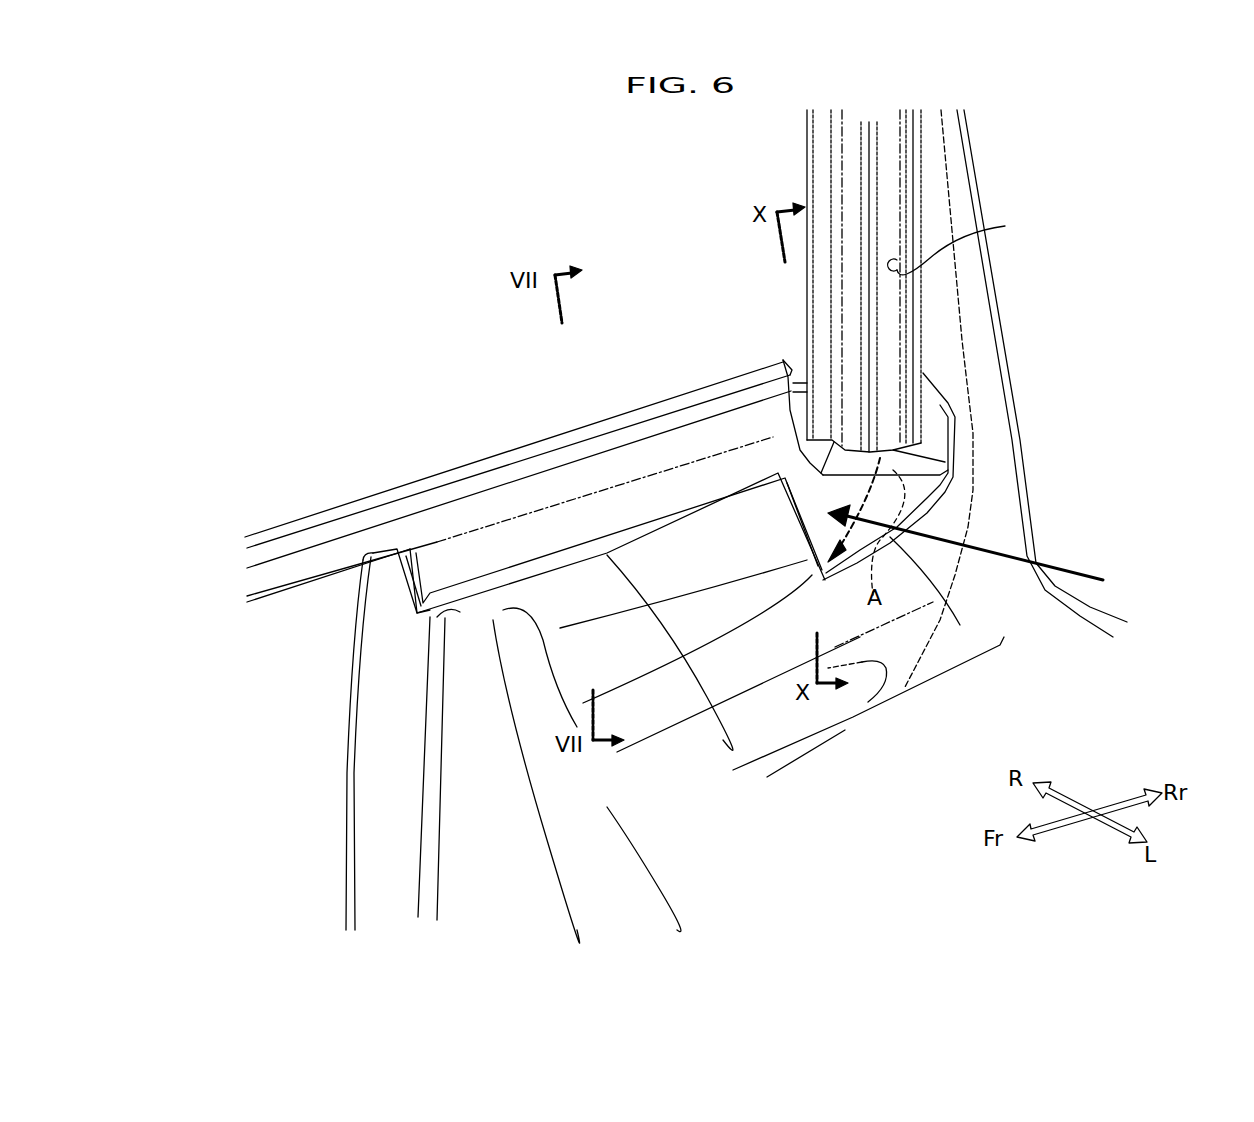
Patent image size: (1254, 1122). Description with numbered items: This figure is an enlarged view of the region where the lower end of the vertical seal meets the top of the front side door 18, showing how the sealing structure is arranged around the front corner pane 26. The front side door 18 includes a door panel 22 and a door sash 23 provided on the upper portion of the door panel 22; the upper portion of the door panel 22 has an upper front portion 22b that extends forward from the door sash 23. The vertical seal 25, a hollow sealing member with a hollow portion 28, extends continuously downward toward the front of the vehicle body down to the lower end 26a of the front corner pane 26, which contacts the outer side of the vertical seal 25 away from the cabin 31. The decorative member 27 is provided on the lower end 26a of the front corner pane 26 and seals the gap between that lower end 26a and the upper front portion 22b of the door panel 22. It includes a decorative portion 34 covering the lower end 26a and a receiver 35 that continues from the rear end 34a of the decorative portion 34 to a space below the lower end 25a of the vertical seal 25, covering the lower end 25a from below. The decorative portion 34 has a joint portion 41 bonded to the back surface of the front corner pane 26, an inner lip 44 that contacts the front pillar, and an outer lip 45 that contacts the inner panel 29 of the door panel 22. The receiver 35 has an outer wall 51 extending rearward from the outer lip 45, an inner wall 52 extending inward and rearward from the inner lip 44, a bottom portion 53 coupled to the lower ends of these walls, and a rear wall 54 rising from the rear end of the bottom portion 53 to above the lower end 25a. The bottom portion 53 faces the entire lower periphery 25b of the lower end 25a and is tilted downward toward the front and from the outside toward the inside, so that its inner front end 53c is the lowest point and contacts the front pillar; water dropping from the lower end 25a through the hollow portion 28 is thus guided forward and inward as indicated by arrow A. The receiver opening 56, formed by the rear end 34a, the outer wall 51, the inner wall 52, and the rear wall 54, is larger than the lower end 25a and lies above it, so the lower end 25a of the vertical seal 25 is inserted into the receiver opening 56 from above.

The front side door 18 is at (345, 733).
The door panel 22 is at (352, 860).
The upper front portion 22b is at (375, 599).
The door sash 23 is at (972, 278).
The vertical seal 25 is at (893, 188).
The lower end 25a is at (893, 423).
The lower periphery 25b is at (770, 472).
The front corner pane 26 is at (652, 277).
The lower end 26a is at (488, 455).
The decorative member 27 is at (860, 718).
The hollow portion 28 is at (961, 245).
The inner panel 29 is at (675, 828).
The cabin 31 is at (1050, 694).
The decorative portion 34 is at (676, 749).
The rear end 34a is at (770, 405).
The receiver 35 is at (909, 596).
The joint portion 41 is at (640, 433).
The inner lip 44 is at (550, 538).
The outer lip 45 is at (473, 592).
The outer wall 51 is at (791, 368).
The inner wall 52 is at (988, 554).
The bottom portion 53 is at (890, 537).
The inner front end 53c is at (806, 562).
The rear wall 54 is at (943, 390).
The receiver opening 56 is at (945, 345).